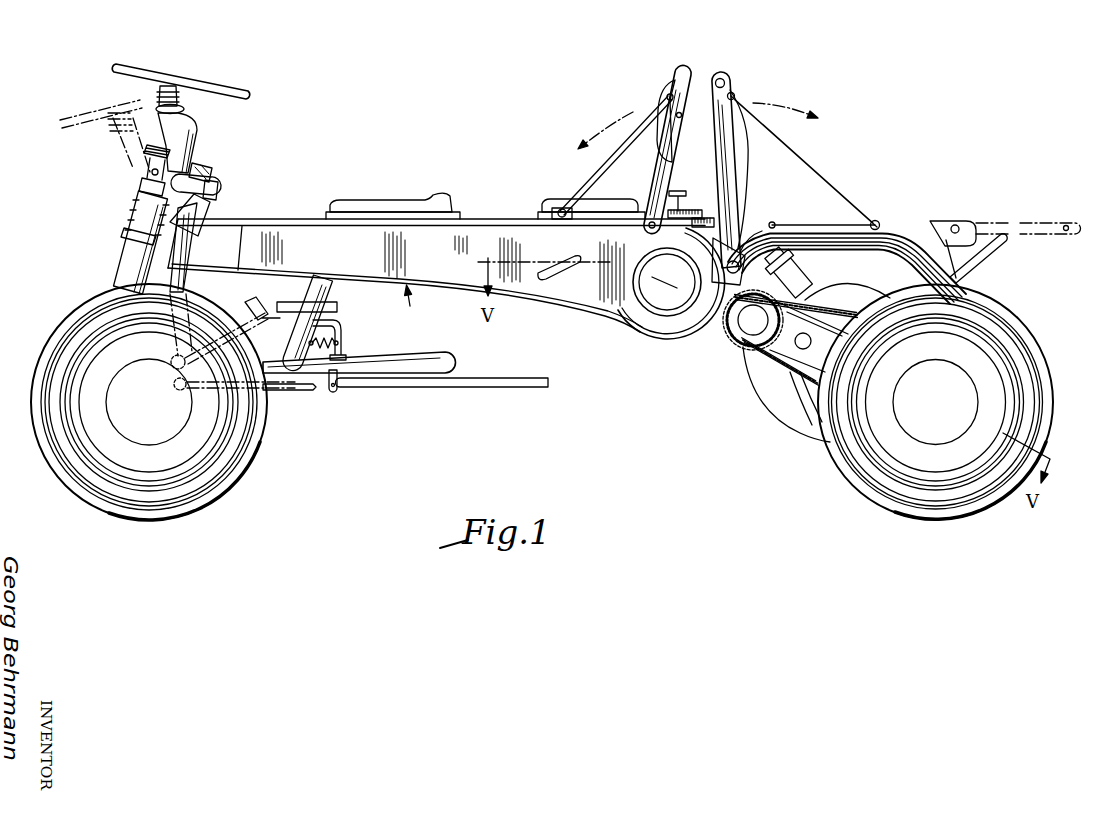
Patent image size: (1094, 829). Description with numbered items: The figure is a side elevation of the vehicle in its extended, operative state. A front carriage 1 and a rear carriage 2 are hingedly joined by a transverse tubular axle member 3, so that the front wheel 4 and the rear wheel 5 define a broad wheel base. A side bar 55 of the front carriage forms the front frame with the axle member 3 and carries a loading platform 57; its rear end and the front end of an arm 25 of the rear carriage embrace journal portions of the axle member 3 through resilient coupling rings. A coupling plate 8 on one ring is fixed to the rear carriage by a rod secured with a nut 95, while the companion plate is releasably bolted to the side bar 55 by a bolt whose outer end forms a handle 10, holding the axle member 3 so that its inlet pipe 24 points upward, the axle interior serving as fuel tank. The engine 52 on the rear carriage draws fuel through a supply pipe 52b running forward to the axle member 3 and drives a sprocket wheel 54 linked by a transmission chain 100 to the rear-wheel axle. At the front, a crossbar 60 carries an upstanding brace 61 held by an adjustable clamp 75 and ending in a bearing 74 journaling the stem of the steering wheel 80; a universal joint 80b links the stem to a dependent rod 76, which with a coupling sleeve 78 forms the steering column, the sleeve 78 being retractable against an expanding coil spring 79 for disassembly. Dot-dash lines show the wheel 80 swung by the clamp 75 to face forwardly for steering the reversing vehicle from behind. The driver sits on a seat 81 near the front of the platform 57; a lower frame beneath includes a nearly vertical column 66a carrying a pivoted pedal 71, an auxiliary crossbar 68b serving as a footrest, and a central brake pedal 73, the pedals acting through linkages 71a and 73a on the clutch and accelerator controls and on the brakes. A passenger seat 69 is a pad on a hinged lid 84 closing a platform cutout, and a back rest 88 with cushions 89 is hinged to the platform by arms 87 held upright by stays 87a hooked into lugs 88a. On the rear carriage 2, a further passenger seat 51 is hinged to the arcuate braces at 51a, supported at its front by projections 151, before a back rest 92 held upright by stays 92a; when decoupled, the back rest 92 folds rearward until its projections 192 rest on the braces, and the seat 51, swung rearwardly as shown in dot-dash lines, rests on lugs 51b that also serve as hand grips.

The front carriage 1 is at (417, 297).
The rear carriage 2 is at (802, 352).
The transverse tubular axle member 3 is at (650, 315).
The front wheel 4 is at (75, 333).
The rear wheel 5 is at (1013, 322).
The coupling plate 8 is at (714, 208).
The handle 10 is at (546, 276).
The inlet pipe 24 is at (682, 190).
The arm 25 is at (795, 355).
The passenger seat 51 is at (920, 224).
The seat hinge 51a is at (960, 218).
The lug 51b is at (990, 262).
The engine 52 is at (848, 280).
The supply pipe 52b is at (785, 412).
The sprocket wheel 54 is at (738, 330).
The side bar 55 is at (272, 228).
The loading platform 57 is at (506, 218).
The crossbar 60 is at (218, 192).
The upstanding brace 61 is at (198, 140).
The column 66a is at (310, 290).
The auxiliary crossbar 68b is at (443, 362).
The passenger seat 69 is at (552, 200).
The pedal 71 is at (256, 305).
The linkage 71a is at (416, 390).
The brake pedal 73 is at (338, 311).
The linkage 73a is at (306, 393).
The bearing 74 is at (160, 124).
The clamp 75 is at (212, 170).
The dependent rod 76 is at (133, 205).
The coupling sleeve 78 is at (125, 268).
The expanding coil spring 79 is at (124, 232).
The steering wheel 80 is at (226, 90).
The universal joint 80b is at (150, 170).
The seat 81 is at (447, 192).
The hinged lid 84 is at (612, 230).
The arm 87 is at (660, 178).
The stay 87a is at (594, 190).
The back rest 88 is at (684, 73).
The lug 88a is at (668, 98).
The cushion 89 is at (668, 82).
The back rest 92 is at (730, 112).
The stay 92a is at (852, 200).
The nut 95 is at (755, 224).
The transmission chain 100 is at (760, 345).
The projection 151 is at (788, 224).
The projection 192 is at (726, 76).